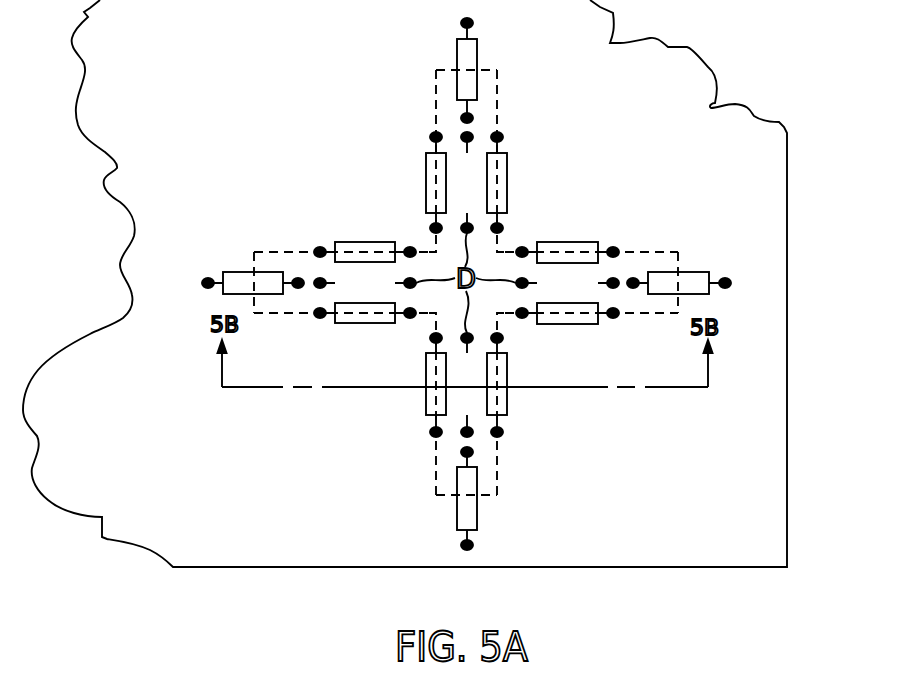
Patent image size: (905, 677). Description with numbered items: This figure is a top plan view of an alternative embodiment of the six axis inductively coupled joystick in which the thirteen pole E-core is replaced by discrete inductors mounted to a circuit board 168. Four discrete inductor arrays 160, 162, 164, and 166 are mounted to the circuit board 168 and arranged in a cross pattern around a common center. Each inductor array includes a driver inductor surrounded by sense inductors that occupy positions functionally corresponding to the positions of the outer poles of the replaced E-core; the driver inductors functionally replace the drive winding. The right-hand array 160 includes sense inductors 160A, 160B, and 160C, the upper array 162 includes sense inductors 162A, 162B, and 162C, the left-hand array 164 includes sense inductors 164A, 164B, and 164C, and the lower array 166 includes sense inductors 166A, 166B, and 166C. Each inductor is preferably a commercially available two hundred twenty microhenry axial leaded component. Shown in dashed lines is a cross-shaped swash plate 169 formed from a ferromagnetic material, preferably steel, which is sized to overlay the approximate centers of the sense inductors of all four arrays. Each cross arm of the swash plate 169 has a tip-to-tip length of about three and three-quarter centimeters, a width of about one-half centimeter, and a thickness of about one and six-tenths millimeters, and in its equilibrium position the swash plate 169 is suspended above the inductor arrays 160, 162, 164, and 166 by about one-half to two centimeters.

The discrete inductor array 160 is at (636, 227).
The sense inductor 160A is at (590, 250).
The sense inductor 160B is at (695, 282).
The sense inductor 160C is at (548, 320).
The discrete inductor array 162 is at (418, 94).
The sense inductor 162A is at (432, 183).
The sense inductor 162B is at (472, 60).
The sense inductor 162C is at (547, 167).
The discrete inductor array 164 is at (291, 228).
The sense inductor 164A is at (380, 320).
The sense inductor 164B is at (232, 278).
The sense inductor 164C is at (350, 248).
The discrete inductor array 166 is at (416, 455).
The sense inductor 166A is at (500, 402).
The sense inductor 166B is at (470, 512).
The sense inductor 166C is at (436, 400).
The circuit board 168 is at (698, 568).
The swash plate 169 is at (654, 250).